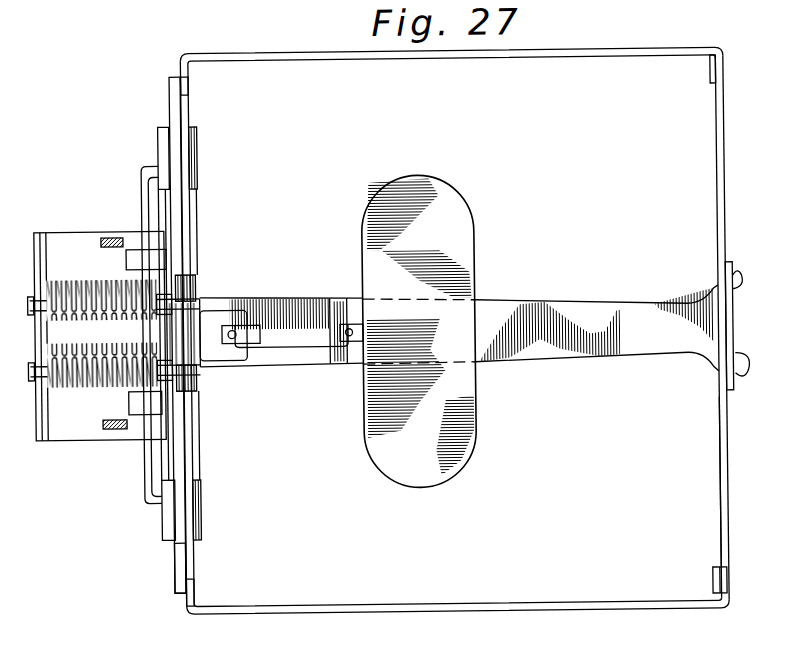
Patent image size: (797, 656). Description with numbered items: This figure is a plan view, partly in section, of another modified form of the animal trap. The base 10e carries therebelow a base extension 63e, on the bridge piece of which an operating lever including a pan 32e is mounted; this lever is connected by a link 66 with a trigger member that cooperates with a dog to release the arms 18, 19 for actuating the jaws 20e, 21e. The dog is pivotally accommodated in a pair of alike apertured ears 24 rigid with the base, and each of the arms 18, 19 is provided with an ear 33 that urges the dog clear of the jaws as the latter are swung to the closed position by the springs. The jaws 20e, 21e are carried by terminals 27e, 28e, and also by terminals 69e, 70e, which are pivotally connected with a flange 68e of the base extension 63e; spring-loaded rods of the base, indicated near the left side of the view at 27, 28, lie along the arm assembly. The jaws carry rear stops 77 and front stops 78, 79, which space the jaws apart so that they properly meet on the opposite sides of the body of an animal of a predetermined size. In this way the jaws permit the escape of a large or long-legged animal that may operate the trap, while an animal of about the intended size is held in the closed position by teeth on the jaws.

The base 10e is at (101, 336).
The arm 18 is at (199, 505).
The arm 19 is at (162, 141).
The jaw 20e is at (552, 607).
The jaw 21e is at (539, 59).
The ear 24 is at (112, 232).
The lower spring rod 27 is at (107, 373).
The terminal 27e is at (175, 562).
The upper spring rod 28 is at (20, 341).
The terminal 28e is at (176, 104).
The pan 32e is at (419, 331).
The ear 33 is at (139, 401).
The base extension 63e is at (459, 331).
The link 66 is at (284, 345).
The flange 68e is at (728, 265).
The terminal 69e is at (722, 502).
The terminal 70e is at (713, 235).
The rear stop 77 is at (188, 79).
The front stop 78 is at (710, 79).
The front stop 79 is at (710, 588).